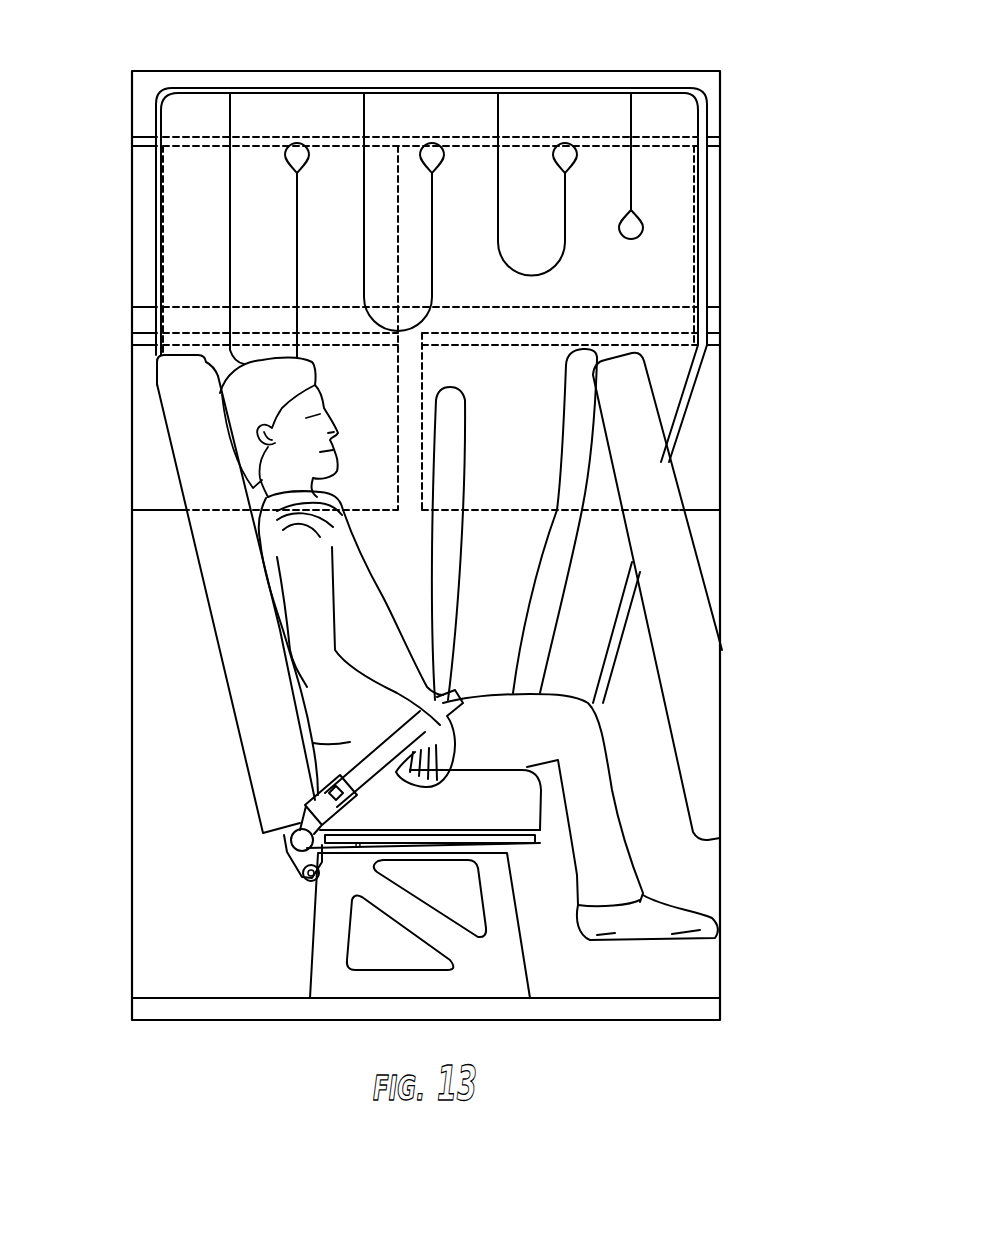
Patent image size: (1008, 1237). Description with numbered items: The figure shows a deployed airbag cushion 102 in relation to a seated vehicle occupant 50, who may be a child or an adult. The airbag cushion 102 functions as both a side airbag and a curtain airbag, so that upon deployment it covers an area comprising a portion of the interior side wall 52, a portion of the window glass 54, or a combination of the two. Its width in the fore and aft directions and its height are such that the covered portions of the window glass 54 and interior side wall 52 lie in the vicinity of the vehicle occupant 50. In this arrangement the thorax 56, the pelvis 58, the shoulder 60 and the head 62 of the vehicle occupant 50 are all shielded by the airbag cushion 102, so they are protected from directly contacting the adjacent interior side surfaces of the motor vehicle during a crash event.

The vehicle occupant 50 is at (238, 415).
The interior side wall 52 is at (667, 115).
The window glass 54 is at (217, 378).
The thorax 56 is at (307, 687).
The pelvis 58 is at (350, 743).
The shoulder 60 is at (263, 515).
The head 62 is at (258, 455).
The airbag cushion 102 is at (686, 268).